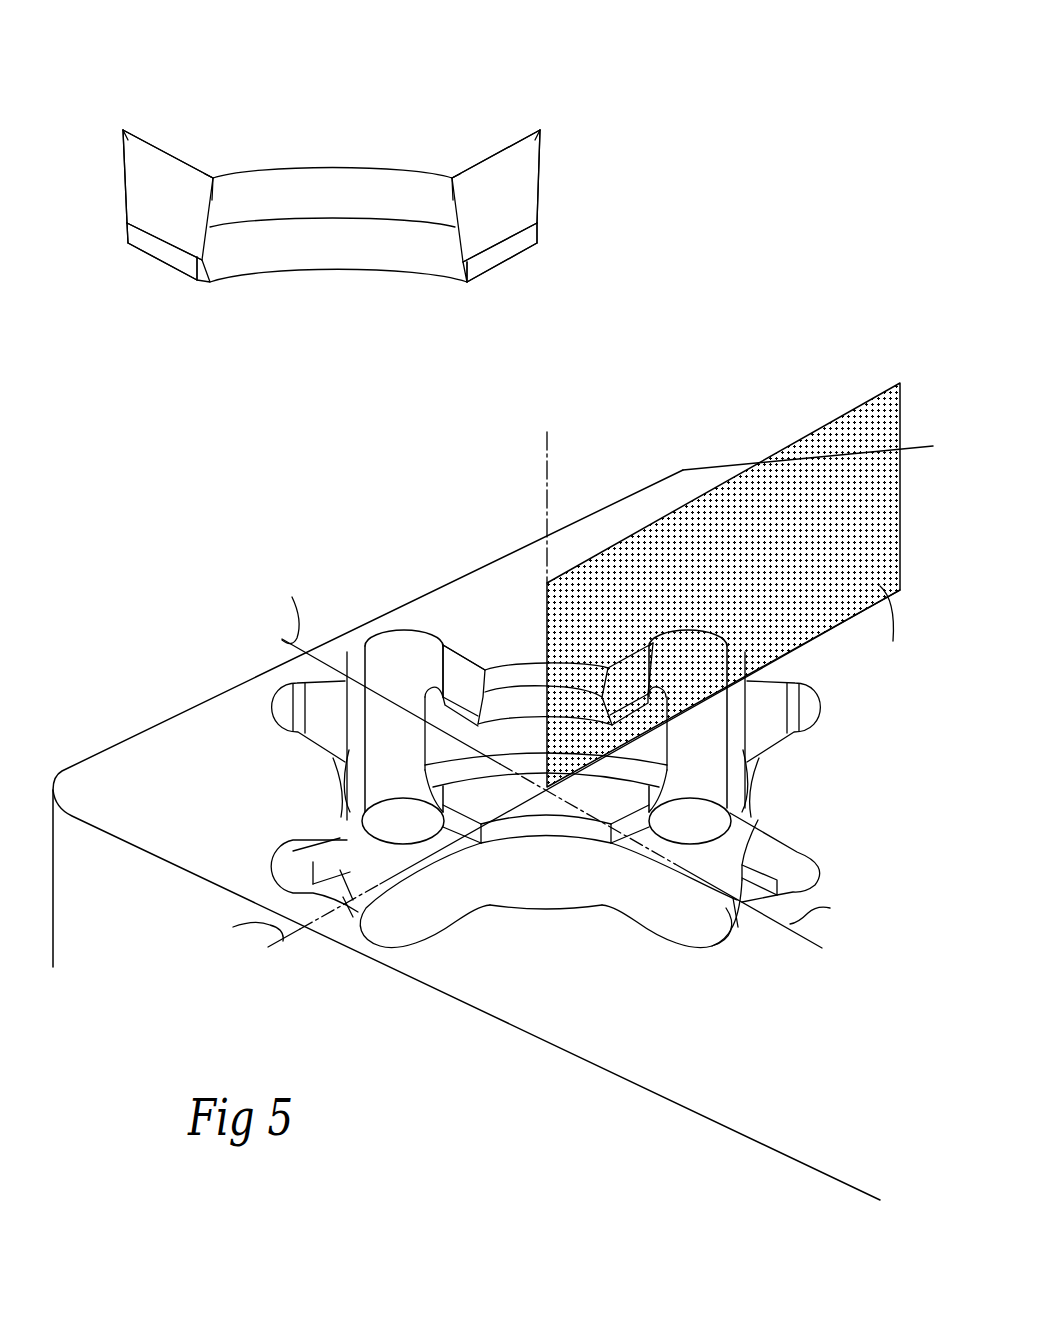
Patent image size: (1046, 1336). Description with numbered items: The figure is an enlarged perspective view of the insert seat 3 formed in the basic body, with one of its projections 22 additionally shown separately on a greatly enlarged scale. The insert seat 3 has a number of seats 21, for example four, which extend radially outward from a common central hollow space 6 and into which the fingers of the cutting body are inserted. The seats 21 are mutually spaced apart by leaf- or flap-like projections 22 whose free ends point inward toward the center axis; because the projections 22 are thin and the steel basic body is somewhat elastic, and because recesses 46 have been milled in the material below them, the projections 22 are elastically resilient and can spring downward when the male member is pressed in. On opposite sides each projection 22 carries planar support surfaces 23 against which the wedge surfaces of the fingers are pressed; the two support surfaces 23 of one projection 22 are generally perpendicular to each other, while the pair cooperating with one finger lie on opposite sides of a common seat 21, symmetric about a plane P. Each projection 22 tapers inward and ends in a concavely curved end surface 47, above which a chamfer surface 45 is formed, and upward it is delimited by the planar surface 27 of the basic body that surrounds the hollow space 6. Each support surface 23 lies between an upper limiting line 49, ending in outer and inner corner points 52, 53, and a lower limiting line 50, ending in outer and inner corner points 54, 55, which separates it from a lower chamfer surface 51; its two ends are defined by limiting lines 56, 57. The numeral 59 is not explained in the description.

The insert seat 3 is at (493, 634).
The hollow space 6 is at (542, 888).
The seats 21 is at (313, 692).
The projections 22 is at (367, 441).
The support surfaces 23 is at (157, 217).
The surface 27 is at (174, 794).
The chamfer surface 45 is at (317, 209).
The recesses 46 is at (443, 744).
The end surface 47 is at (317, 255).
The upper limiting line 49 is at (163, 147).
The lower limiting line 50 is at (178, 257).
The lower chamfer surface 51 is at (148, 246).
The outer corner point 52 is at (117, 128).
The inner corner point 53 is at (213, 178).
The outer corner point 54 is at (127, 223).
The inner corner point 55 is at (200, 267).
The limiting line 56 is at (213, 200).
The limiting line 57 is at (127, 180).
The pins 59 is at (390, 675).